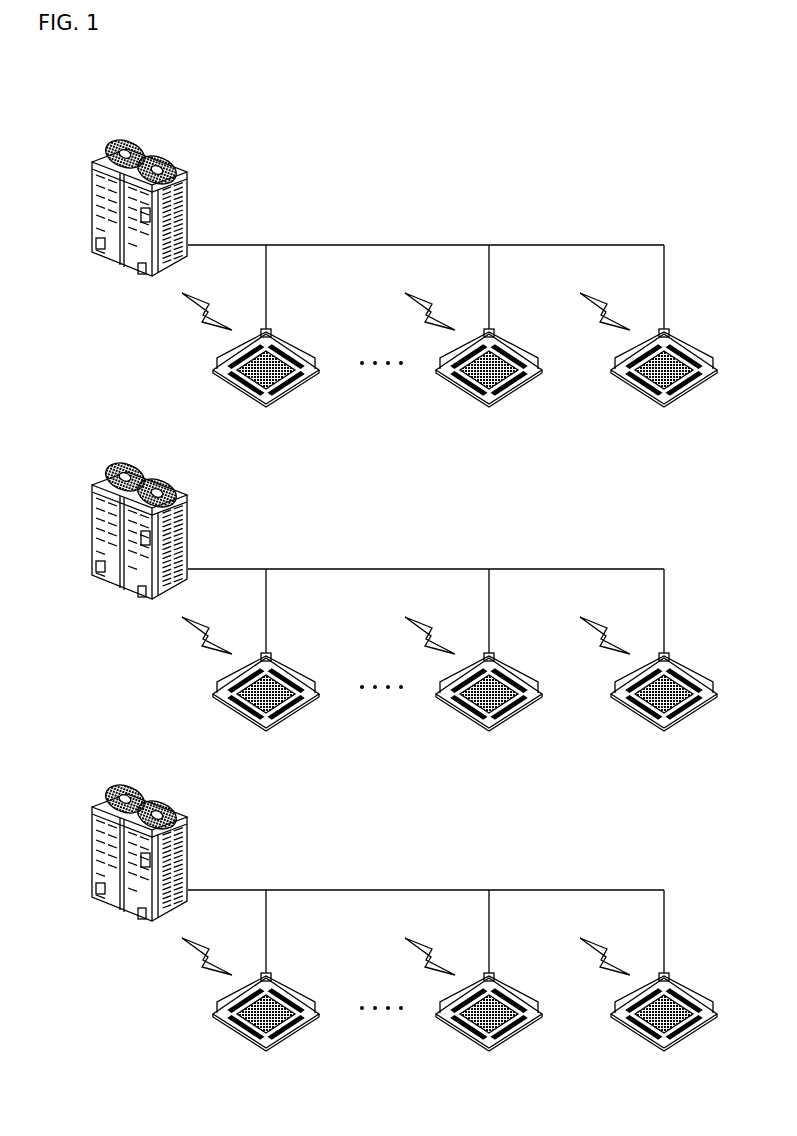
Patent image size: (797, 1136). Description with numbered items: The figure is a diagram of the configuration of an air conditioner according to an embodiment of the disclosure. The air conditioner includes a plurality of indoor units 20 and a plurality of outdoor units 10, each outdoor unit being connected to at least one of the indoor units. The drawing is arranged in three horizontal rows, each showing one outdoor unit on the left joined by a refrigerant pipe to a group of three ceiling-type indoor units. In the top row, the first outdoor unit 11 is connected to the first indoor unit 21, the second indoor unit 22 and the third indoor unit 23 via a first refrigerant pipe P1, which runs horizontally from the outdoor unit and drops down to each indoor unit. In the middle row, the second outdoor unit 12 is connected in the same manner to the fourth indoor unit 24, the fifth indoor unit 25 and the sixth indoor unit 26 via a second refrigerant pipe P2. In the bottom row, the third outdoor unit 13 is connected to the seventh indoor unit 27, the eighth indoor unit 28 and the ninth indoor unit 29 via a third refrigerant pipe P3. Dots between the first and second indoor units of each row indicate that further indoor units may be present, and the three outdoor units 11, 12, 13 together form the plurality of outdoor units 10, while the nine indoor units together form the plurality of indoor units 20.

The outdoor units 10 is at (70, 95).
The first outdoor unit 11 is at (116, 144).
The second outdoor unit 12 is at (116, 467).
The third outdoor unit 13 is at (116, 790).
The indoor units 20 is at (227, 203).
The first indoor unit 21 is at (281, 397).
The second indoor unit 22 is at (504, 397).
The third indoor unit 23 is at (679, 397).
The fourth indoor unit 24 is at (281, 721).
The fifth indoor unit 25 is at (504, 721).
The sixth indoor unit 26 is at (679, 721).
The seventh indoor unit 27 is at (281, 1041).
The eighth indoor unit 28 is at (504, 1041).
The ninth indoor unit 29 is at (679, 1041).
The first refrigerant pipe P1 is at (609, 245).
The second refrigerant pipe P2 is at (611, 569).
The third refrigerant pipe P3 is at (611, 890).